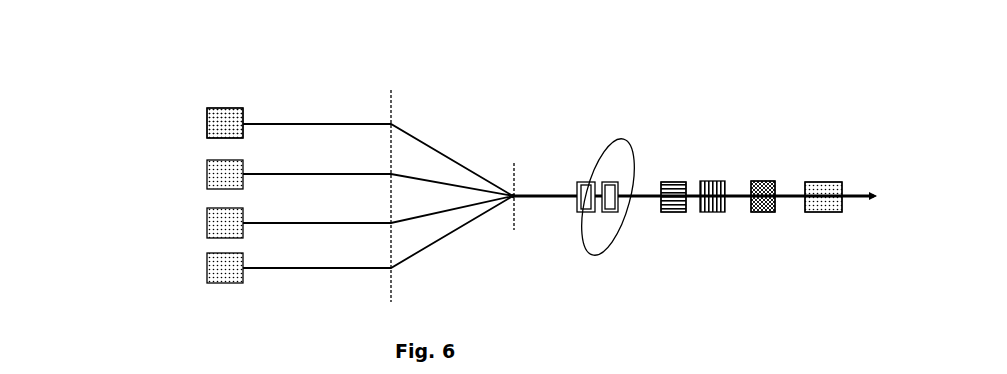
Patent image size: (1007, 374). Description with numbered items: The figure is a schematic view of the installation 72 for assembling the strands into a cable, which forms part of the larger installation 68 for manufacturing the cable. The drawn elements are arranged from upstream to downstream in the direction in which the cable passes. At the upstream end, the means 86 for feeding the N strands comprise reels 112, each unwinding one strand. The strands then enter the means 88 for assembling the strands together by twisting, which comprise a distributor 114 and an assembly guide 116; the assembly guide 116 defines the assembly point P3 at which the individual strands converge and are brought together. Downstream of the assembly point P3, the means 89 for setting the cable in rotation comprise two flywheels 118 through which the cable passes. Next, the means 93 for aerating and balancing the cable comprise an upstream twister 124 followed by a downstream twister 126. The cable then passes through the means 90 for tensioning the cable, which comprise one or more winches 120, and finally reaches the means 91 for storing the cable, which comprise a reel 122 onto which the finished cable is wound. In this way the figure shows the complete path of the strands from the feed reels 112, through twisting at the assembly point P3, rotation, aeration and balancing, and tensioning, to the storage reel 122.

The installation 68 is at (176, 38).
The installation for assembling the strands 72 is at (181, 76).
The means for feeding the N strands 86 is at (181, 186).
The reels 112 is at (222, 115).
The distributor 114 is at (391, 92).
The means for assembling the N strands together by twisting 88 is at (510, 150).
The assembly guide 116 is at (516, 232).
The assembly point P3 is at (520, 190).
The flywheels 118 is at (611, 200).
The means for setting the cable in rotation 89 is at (605, 122).
The means for aerating and balancing the cable 93 is at (697, 160).
The upstream twister 124 is at (673, 213).
The downstream twister 126 is at (716, 213).
The winches 120 is at (760, 180).
The means for tensioning the cable 90 is at (765, 222).
The means for storing the cable 91 is at (830, 172).
The reel for winding the cable 122 is at (826, 202).